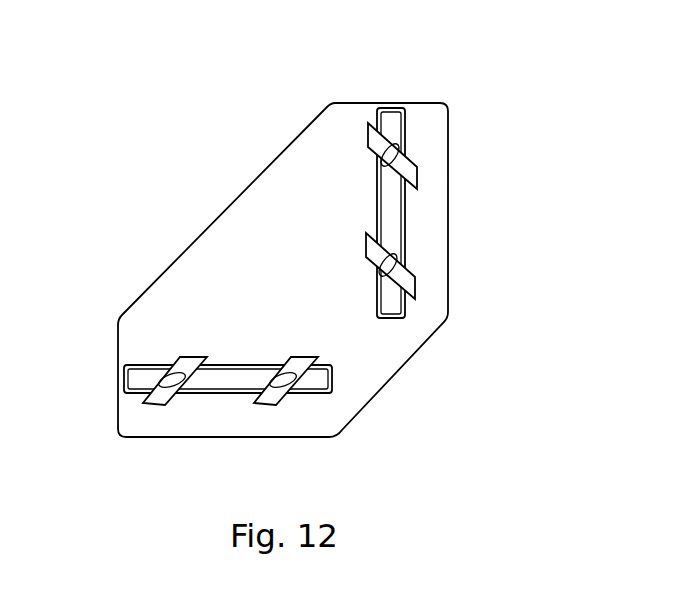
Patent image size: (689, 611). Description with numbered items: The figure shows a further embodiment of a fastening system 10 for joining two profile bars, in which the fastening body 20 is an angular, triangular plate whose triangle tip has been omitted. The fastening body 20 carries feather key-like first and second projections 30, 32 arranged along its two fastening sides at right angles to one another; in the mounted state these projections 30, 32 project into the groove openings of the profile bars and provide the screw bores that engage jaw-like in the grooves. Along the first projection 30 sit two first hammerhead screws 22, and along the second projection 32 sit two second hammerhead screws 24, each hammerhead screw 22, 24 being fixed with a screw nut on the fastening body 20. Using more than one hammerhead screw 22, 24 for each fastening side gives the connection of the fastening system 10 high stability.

The fastening system 10 is at (243, 126).
The fastening body 20 is at (277, 243).
The first hammerhead screw 22 is at (405, 172).
The second hammerhead screw 24 is at (157, 395).
The first projection 30 is at (393, 120).
The second projection 32 is at (230, 382).